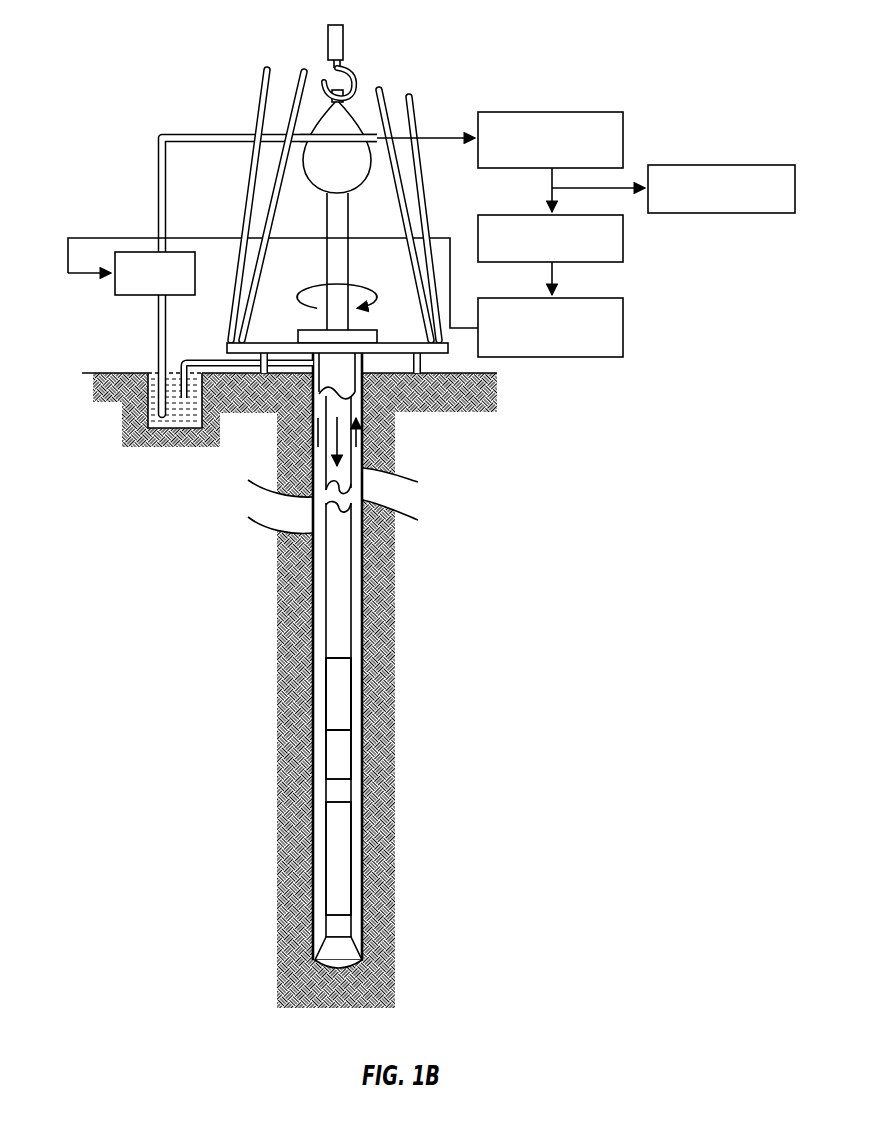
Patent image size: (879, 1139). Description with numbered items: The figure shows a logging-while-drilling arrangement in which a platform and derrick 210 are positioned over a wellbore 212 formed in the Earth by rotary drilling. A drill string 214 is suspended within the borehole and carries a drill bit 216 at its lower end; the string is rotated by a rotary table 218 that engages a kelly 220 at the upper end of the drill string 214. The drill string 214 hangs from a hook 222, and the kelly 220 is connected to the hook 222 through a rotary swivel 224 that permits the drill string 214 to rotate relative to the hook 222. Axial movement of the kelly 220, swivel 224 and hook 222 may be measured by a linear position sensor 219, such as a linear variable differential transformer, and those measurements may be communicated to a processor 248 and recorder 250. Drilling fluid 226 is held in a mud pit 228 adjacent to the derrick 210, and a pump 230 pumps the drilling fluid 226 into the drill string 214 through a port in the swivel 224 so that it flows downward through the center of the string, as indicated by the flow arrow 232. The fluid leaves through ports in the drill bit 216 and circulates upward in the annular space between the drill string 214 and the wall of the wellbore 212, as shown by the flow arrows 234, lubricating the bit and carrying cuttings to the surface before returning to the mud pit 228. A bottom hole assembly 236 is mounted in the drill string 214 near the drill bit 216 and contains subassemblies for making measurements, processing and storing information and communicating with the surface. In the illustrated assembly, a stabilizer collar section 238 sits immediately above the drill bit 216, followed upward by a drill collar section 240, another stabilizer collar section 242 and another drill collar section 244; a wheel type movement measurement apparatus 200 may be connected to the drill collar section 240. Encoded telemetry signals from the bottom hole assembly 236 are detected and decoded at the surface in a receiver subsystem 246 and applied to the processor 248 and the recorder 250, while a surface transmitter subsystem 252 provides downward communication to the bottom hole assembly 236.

The wheel type movement measurement apparatus 200 is at (343, 790).
The platform and derrick 210 is at (456, 355).
The wellbore 212 is at (350, 482).
The drill string 214 is at (334, 617).
The drill bit 216 is at (325, 952).
The rotary table 218 is at (360, 330).
The linear position sensor 219 is at (343, 25).
The kelly 220 is at (335, 252).
The hook 222 is at (345, 70).
The rotary swivel 224 is at (315, 168).
The drilling fluid 226 is at (180, 428).
The mud pit 228 is at (148, 402).
The pump 230 is at (148, 252).
The flow arrow 232 is at (337, 447).
The flow arrows 234 is at (357, 425).
The bottom hole assembly 236 is at (410, 958).
The stabilizer collar section 238 is at (337, 837).
The drill collar section 240 is at (337, 760).
The stabilizer collar section 242 is at (333, 710).
The drill collar section 244 is at (312, 652).
The receiver subsystem 246 is at (565, 112).
The processor 248 is at (623, 240).
The recorder 250 is at (732, 165).
The surface transmitter subsystem 252 is at (623, 320).